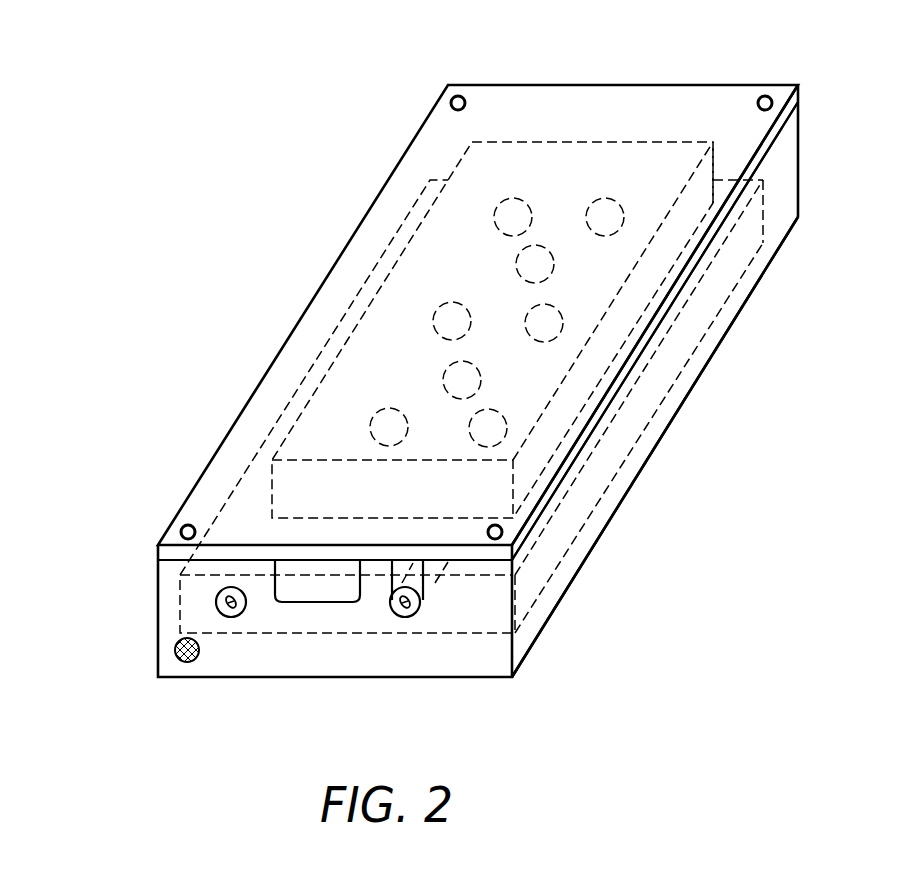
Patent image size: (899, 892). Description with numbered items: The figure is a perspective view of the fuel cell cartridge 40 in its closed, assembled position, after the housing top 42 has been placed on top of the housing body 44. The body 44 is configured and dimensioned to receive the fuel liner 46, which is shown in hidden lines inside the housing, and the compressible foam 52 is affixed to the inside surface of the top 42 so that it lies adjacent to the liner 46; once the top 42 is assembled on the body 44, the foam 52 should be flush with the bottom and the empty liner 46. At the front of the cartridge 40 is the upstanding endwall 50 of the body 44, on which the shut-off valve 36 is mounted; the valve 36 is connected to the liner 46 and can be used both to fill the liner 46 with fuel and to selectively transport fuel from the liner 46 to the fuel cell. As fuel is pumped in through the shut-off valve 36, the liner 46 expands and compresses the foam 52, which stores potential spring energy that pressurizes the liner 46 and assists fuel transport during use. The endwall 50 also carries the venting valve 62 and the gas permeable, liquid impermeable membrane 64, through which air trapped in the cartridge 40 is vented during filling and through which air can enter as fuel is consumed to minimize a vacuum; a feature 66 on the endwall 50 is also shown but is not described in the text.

The cartridge 40 is at (322, 108).
The housing top 42 is at (717, 102).
The housing body 44 is at (785, 155).
The fuel liner 46 is at (619, 429).
The upstanding endwall 50 is at (172, 606).
The compressible foam 52 is at (433, 278).
The shut-off valve 36 is at (417, 613).
The venting valve 62 is at (242, 613).
The gas permeable, liquid impermeable membrane 64 is at (187, 662).
The notch 66 is at (310, 590).